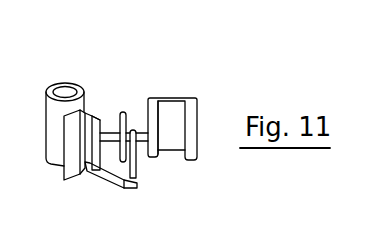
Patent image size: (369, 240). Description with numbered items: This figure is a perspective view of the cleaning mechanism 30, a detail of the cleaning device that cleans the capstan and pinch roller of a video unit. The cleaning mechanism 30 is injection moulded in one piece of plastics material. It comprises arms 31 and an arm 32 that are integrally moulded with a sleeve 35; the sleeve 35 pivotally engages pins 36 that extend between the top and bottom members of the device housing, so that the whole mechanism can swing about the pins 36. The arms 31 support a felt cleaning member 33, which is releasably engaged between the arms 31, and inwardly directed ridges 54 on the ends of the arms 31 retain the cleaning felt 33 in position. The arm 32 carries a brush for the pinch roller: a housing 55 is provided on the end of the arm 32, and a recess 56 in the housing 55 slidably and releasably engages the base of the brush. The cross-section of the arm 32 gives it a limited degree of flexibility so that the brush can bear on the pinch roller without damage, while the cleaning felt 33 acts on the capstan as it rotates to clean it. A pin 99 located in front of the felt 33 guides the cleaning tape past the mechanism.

The cleaning mechanism 30 is at (213, 87).
The arms 31 is at (83, 170).
The arm 32 is at (143, 143).
The felt cleaning member 33 is at (97, 116).
The sleeve 35 is at (48, 87).
The pins 36 is at (66, 91).
The inwardly directed ridges 54 is at (72, 157).
The housing 55 is at (172, 112).
The recess 56 is at (172, 143).
The pin 99 is at (141, 172).